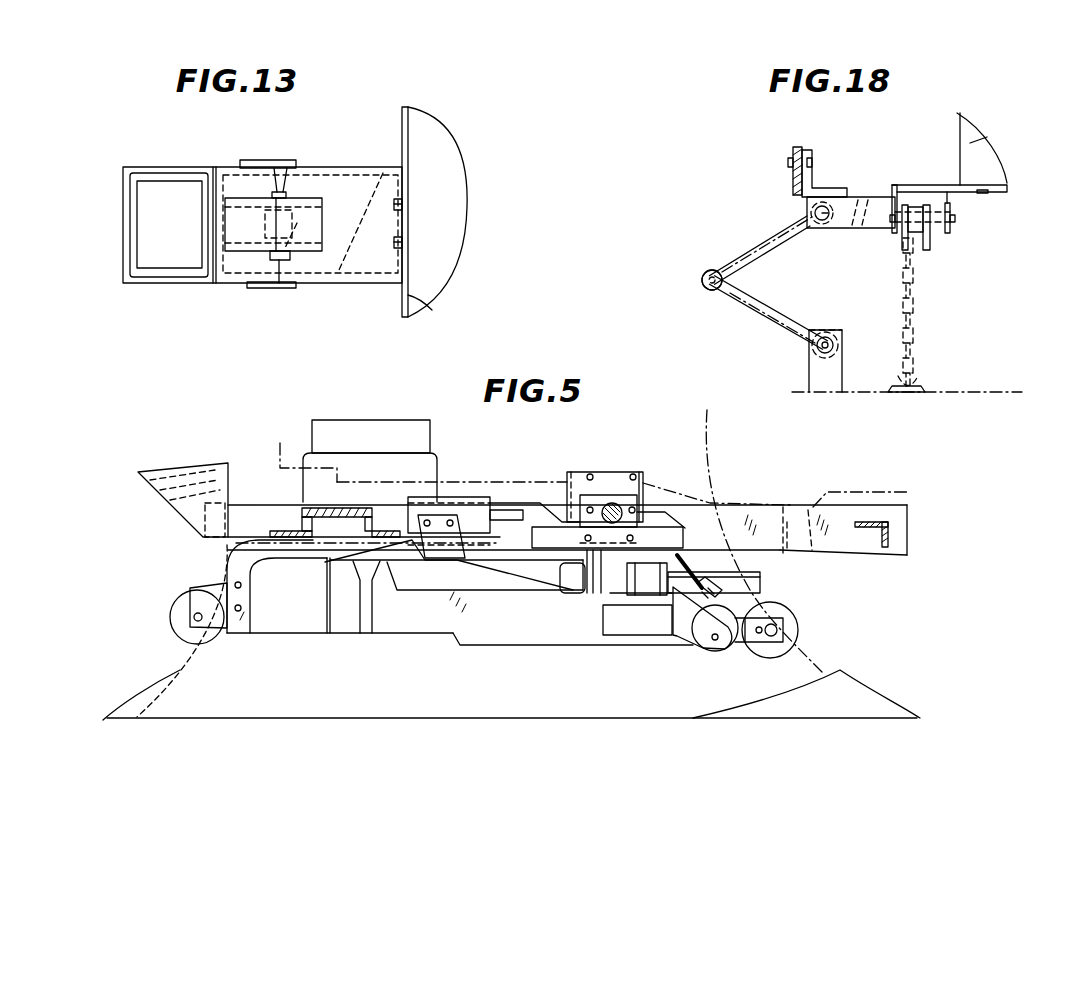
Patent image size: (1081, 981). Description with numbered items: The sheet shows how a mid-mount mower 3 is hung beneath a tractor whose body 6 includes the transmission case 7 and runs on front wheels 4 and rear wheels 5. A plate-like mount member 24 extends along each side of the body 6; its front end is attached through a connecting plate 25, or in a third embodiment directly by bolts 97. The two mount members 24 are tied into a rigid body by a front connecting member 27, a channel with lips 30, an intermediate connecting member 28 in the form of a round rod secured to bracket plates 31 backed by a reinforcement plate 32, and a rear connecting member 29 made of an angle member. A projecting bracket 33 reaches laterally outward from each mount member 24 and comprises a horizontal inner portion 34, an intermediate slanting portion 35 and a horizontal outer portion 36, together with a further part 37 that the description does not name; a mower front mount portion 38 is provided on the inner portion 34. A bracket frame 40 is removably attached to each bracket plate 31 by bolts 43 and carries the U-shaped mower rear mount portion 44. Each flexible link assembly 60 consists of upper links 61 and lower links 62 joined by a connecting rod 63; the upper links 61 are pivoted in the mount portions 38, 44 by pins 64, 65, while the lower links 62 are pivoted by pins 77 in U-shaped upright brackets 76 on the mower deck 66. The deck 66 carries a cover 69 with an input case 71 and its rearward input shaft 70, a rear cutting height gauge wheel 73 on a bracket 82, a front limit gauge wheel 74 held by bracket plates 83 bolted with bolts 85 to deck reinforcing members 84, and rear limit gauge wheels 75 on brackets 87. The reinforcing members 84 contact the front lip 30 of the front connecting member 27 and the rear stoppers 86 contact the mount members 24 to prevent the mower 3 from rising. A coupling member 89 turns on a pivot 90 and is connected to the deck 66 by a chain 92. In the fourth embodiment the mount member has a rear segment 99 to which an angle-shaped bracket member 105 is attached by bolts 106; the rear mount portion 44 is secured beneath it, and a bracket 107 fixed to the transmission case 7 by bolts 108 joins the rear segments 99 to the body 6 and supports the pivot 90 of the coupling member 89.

In FIG. 5, the mower 3 is at (511, 646).
In FIG. 5, the front wheels 4 is at (188, 690).
In FIG. 5, the rear wheels 5 is at (837, 680).
In FIG. 13, the tractor body 6 is at (400, 122).
In FIG. 18, the tractor body 6 is at (958, 135).
In FIG. 5, the tractor body 6 is at (808, 508).
In FIG. 13, the transmission case 7 is at (437, 140).
In FIG. 18, the transmission case 7 is at (970, 143).
In FIG. 5, the transmission case 7 is at (787, 527).
In FIG. 13, the mount members 24 is at (407, 295).
In FIG. 5, the mount members 24 is at (727, 517).
In FIG. 5, the connecting plate 25 is at (163, 493).
In FIG. 5, the front connecting member 27 is at (338, 508).
In FIG. 5, the intermediate connecting member 28 is at (614, 505).
In FIG. 5, the rear connecting member 29 is at (910, 512).
In FIG. 5, the lips 30 is at (285, 530).
In FIG. 5, the bracket plates 31 is at (640, 503).
In FIG. 5, the reinforcement plate 32 is at (545, 528).
In FIG. 13, the projecting brackets 33 is at (118, 257).
In FIG. 5, the projecting brackets 33 is at (422, 467).
In FIG. 13, the horizontal inner portion 34 is at (363, 277).
In FIG. 13, the intermediate slanting portion 35 is at (240, 263).
In FIG. 13, the horizontal outer portion 36 is at (160, 276).
In FIG. 13, the cover plate 37 is at (135, 225).
In FIG. 5, the cover plate 37 is at (393, 432).
In FIG. 13, the mower front mount portion 38 is at (238, 210).
In FIG. 5, the bracket frame 40 is at (610, 470).
In FIG. 5, the bolts 43 is at (643, 523).
In FIG. 18, the mower rear mount portion 44 is at (850, 228).
In FIG. 18, the flexible link assemblies 60 is at (682, 277).
In FIG. 13, the upper links 61 is at (297, 223).
In FIG. 18, the upper links 61 is at (758, 242).
In FIG. 18, the lower links 62 is at (763, 323).
In FIG. 18, the connecting rod 63 is at (708, 289).
In FIG. 13, the pin 64 is at (280, 193).
In FIG. 18, the pin 65 is at (813, 212).
In FIG. 18, the mower deck 66 is at (940, 390).
In FIG. 5, the mower deck 66 is at (418, 627).
In FIG. 5, the cover 69 is at (530, 590).
In FIG. 5, the input shaft 70 is at (508, 510).
In FIG. 5, the input case 71 is at (462, 505).
In FIG. 5, the rear cutting height adjusting gauge wheel 73 is at (767, 658).
In FIG. 5, the front limit gauge wheel 74 is at (175, 633).
In FIG. 5, the rear limit gauge wheels 75 is at (717, 653).
In FIG. 18, the upright brackets 76 is at (810, 367).
In FIG. 5, the upright brackets 76 is at (653, 583).
In FIG. 18, the pins 77 is at (837, 342).
In FIG. 5, the bracket 82 is at (743, 645).
In FIG. 5, the bracket plates 83 is at (215, 592).
In FIG. 5, the deck reinforcing members 84 is at (265, 558).
In FIG. 5, the bolts 85 is at (240, 610).
In FIG. 5, the rear stoppers 86 is at (597, 593).
In FIG. 5, the bracket 87 is at (692, 620).
In FIG. 18, the coupling member 89 is at (930, 238).
In FIG. 18, the pivot 90 is at (953, 220).
In FIG. 18, the chain 92 is at (915, 323).
In FIG. 13, the bolts 97 is at (395, 203).
In FIG. 18, the rear segment 99 is at (793, 152).
In FIG. 18, the bracket member 105 is at (838, 188).
In FIG. 18, the bolts 106 is at (813, 162).
In FIG. 18, the bracket 107 is at (982, 180).
In FIG. 18, the bolts 108 is at (985, 195).